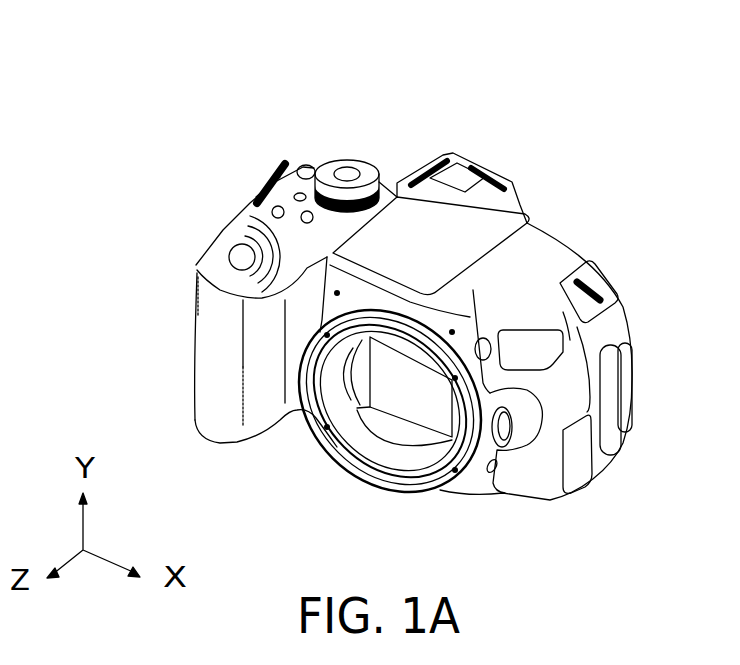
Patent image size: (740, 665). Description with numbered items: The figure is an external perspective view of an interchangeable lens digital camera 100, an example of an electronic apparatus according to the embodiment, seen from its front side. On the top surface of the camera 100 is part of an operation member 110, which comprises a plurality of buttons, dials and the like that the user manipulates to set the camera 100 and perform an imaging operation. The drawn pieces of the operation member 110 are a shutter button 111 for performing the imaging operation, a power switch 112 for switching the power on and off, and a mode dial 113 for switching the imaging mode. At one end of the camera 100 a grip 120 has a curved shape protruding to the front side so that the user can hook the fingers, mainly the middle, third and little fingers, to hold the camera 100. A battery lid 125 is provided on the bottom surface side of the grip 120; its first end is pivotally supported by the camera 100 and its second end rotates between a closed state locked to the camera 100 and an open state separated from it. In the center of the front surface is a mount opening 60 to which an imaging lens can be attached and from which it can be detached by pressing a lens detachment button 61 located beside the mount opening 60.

The camera 100 is at (683, 128).
The operation member 110 is at (385, 35).
The shutter button 111 is at (230, 253).
The power switch 112 is at (300, 165).
The mode dial 113 is at (358, 163).
The grip 120 is at (203, 363).
The battery lid 125 is at (245, 447).
The mount opening 60 is at (340, 450).
The lens detachment button 61 is at (503, 440).